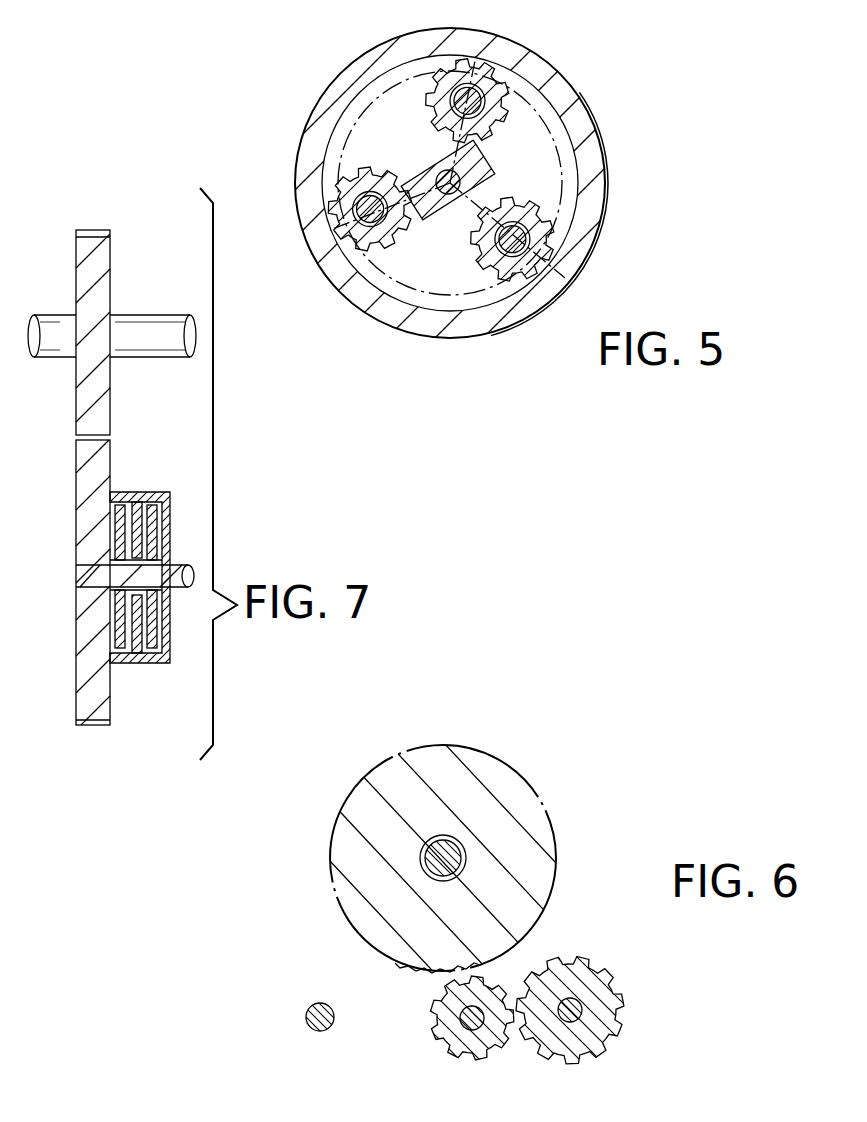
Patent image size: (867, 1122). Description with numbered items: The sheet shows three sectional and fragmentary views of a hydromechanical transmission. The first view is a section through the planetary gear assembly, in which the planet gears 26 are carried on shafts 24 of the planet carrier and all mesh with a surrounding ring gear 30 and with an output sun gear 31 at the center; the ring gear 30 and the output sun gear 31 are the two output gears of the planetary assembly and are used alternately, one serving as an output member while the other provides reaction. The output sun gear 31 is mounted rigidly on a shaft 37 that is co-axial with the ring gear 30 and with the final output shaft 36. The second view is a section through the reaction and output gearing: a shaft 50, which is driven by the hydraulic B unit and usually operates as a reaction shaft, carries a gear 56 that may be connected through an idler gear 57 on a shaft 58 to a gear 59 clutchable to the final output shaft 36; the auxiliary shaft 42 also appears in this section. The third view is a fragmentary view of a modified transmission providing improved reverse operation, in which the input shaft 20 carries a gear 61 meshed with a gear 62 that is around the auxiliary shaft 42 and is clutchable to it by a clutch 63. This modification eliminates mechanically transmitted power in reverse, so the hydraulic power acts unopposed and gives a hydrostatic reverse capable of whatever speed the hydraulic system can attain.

In FIG. 7, the input shaft 20 is at (153, 327).
In FIG. 5, the shafts 24 is at (488, 100).
In FIG. 5, the planet gears 26 is at (437, 92).
In FIG. 5, the ring gear 30 is at (481, 327).
In FIG. 5, the output sun gear 31 is at (450, 227).
In FIG. 5, the shaft 37 is at (483, 170).
In FIG. 6, the final output shaft 36 is at (453, 838).
In FIG. 7, the auxiliary shaft 42 is at (82, 577).
In FIG. 6, the auxiliary shaft 42 is at (332, 1017).
In FIG. 6, the shaft 50 is at (577, 1007).
In FIG. 6, the gear 56 is at (593, 980).
In FIG. 6, the idler gear 57 is at (477, 1048).
In FIG. 6, the shaft 58 is at (470, 1033).
In FIG. 6, the gear 59 is at (533, 906).
In FIG. 7, the gear 61 is at (102, 260).
In FIG. 7, the gear 62 is at (82, 495).
In FIG. 7, the clutch 63 is at (162, 493).